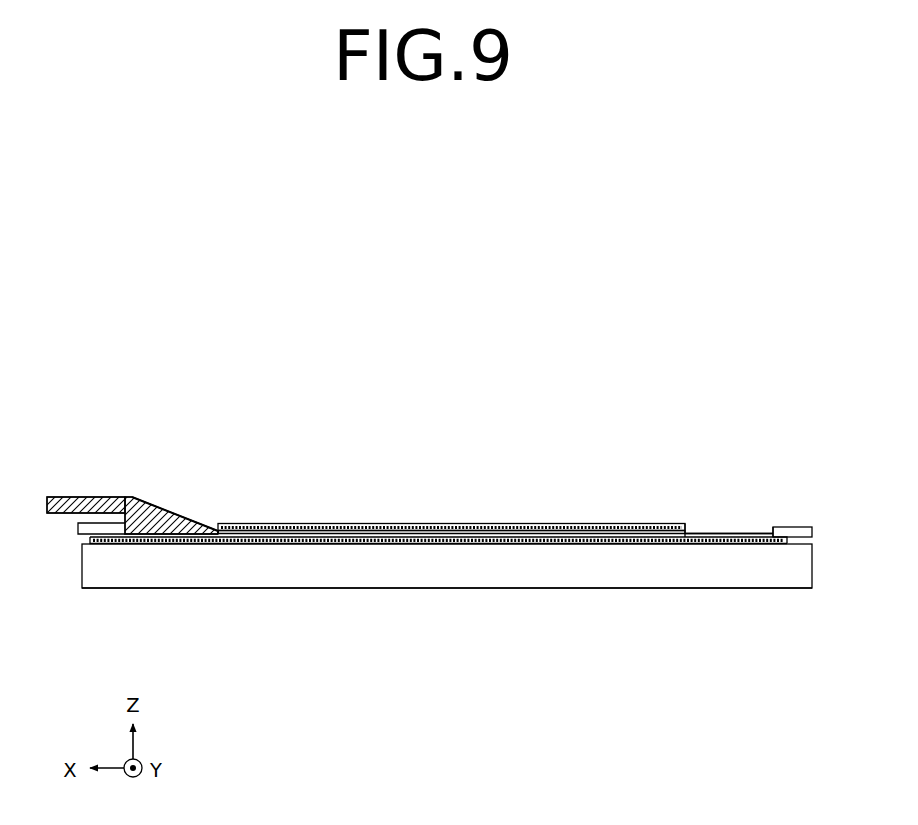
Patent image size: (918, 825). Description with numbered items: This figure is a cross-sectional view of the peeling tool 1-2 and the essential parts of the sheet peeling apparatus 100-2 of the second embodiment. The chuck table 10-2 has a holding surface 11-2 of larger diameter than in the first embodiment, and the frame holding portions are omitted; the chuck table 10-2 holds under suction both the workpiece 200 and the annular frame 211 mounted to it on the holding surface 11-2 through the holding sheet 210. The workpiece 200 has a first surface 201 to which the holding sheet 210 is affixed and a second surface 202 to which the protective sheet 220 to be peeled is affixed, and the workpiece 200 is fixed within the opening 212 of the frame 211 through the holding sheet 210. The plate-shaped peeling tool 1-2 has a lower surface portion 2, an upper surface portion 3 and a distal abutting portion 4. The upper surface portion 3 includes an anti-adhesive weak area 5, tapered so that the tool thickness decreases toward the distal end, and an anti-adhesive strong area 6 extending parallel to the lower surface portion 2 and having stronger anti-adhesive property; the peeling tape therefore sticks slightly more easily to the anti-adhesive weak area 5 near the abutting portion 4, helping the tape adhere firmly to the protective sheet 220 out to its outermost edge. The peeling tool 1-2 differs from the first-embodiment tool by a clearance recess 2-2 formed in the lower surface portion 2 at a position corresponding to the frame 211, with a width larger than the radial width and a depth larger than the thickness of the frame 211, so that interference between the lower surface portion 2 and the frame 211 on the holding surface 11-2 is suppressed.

The sheet peeling apparatus 100-2 is at (332, 615).
The chuck table 10-2 is at (495, 568).
The holding surface 11-2 is at (445, 537).
The peeling tool 1-2 is at (63, 497).
The clearance recess 2-2 is at (53, 514).
The lower surface portion 2 is at (143, 538).
The upper surface portion 3 is at (188, 455).
The anti-adhesive weak area 5 is at (163, 504).
The anti-adhesive strong area 6 is at (113, 497).
The abutting portion 4 is at (230, 523).
The workpiece 200 is at (691, 530).
The first surface 201 is at (648, 544).
The second surface 202 is at (652, 533).
The holding sheet 210 is at (590, 545).
The protective sheet 220 is at (590, 529).
The annular frame 211 is at (800, 527).
The opening 212 is at (772, 530).